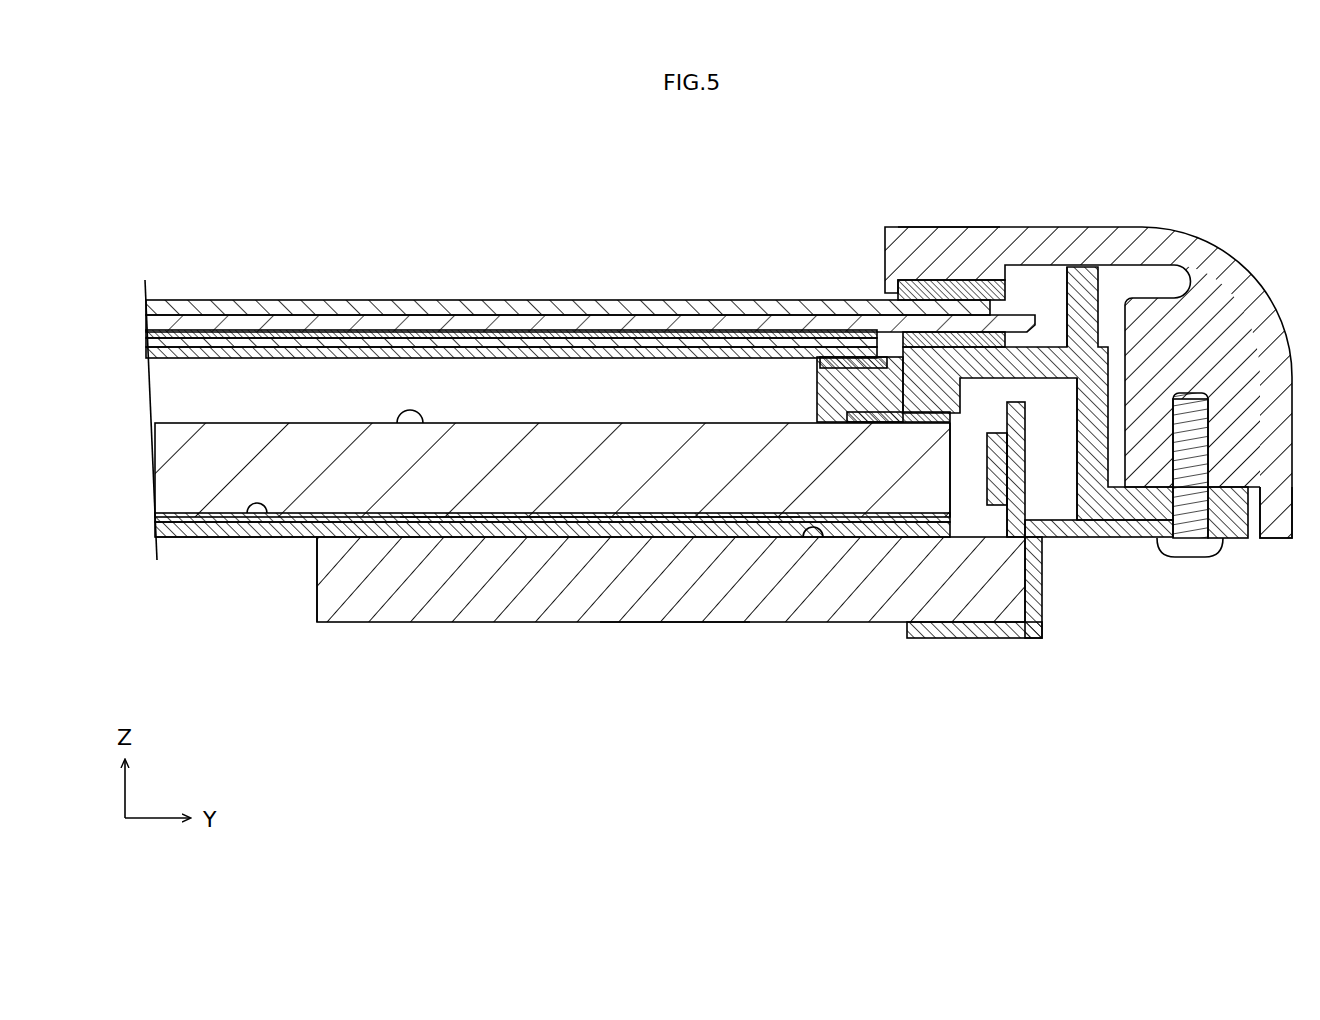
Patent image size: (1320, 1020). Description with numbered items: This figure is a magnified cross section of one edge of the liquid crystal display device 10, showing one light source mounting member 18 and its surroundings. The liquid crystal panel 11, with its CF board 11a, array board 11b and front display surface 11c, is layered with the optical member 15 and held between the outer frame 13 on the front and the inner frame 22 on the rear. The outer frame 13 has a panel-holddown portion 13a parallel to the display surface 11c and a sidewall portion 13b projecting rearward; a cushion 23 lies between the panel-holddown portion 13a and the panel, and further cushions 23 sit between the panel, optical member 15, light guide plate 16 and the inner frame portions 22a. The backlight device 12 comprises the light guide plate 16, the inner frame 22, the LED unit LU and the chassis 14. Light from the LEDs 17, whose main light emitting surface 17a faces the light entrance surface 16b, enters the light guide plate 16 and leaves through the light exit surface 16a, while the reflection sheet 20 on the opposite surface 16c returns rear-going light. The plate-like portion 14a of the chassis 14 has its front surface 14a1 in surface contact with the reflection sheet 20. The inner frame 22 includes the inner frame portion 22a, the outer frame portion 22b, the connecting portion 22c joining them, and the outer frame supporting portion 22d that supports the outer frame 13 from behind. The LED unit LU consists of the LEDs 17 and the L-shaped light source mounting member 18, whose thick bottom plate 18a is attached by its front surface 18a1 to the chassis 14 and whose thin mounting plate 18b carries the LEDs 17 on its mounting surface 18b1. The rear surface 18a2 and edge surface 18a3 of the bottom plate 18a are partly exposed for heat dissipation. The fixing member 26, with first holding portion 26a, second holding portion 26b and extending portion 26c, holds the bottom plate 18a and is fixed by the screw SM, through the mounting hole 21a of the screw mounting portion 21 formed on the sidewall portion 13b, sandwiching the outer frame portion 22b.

The liquid crystal display device 10 is at (330, 212).
The liquid crystal panel 11 is at (668, 247).
The CF board 11a is at (662, 312).
The array board 11b is at (607, 330).
The display surface 11c is at (536, 300).
The backlight device 12 is at (492, 732).
The outer frame 13 is at (897, 227).
The panel-holddown portion 13a is at (952, 227).
The sidewall portion 13b is at (1273, 540).
The chassis 14 is at (548, 591).
The plate-like portion 14a is at (212, 538).
The front surface 14a1 is at (263, 520).
The optical member 15 is at (400, 352).
The light guide plate 16 is at (510, 490).
The light exit surface 16a is at (400, 425).
The light entrance surface 16b is at (951, 478).
The opposite surface 16c is at (580, 518).
The LED 17 is at (925, 343).
The main light emitting surface 17a is at (985, 445).
The light source mounting member 18 is at (691, 555).
The bottom plate 18a is at (742, 595).
The front surface 18a1 is at (816, 540).
The rear surface 18a2 is at (670, 622).
The edge surface 18a3 is at (312, 580).
The mounting plate 18b is at (1020, 462).
The mounting surface 18b1 is at (997, 507).
The reflection sheet 20 is at (626, 520).
The screw mounting portion 21 is at (1152, 330).
The mounting hole 21a is at (1190, 400).
The inner frame 22 is at (1103, 340).
The inner frame portion 22a is at (843, 390).
The outer frame portion 22b is at (1243, 540).
The connecting portion 22c is at (1093, 457).
The outer frame supporting portion 22d is at (1082, 275).
The cushion 23 is at (950, 340).
The fixing member 26 is at (1040, 649).
The first holding portion 26a is at (967, 630).
The second holding portion 26b is at (1040, 590).
The extending portion 26c is at (1115, 530).
The LED unit LU is at (1000, 400).
The screw SM is at (1190, 545).